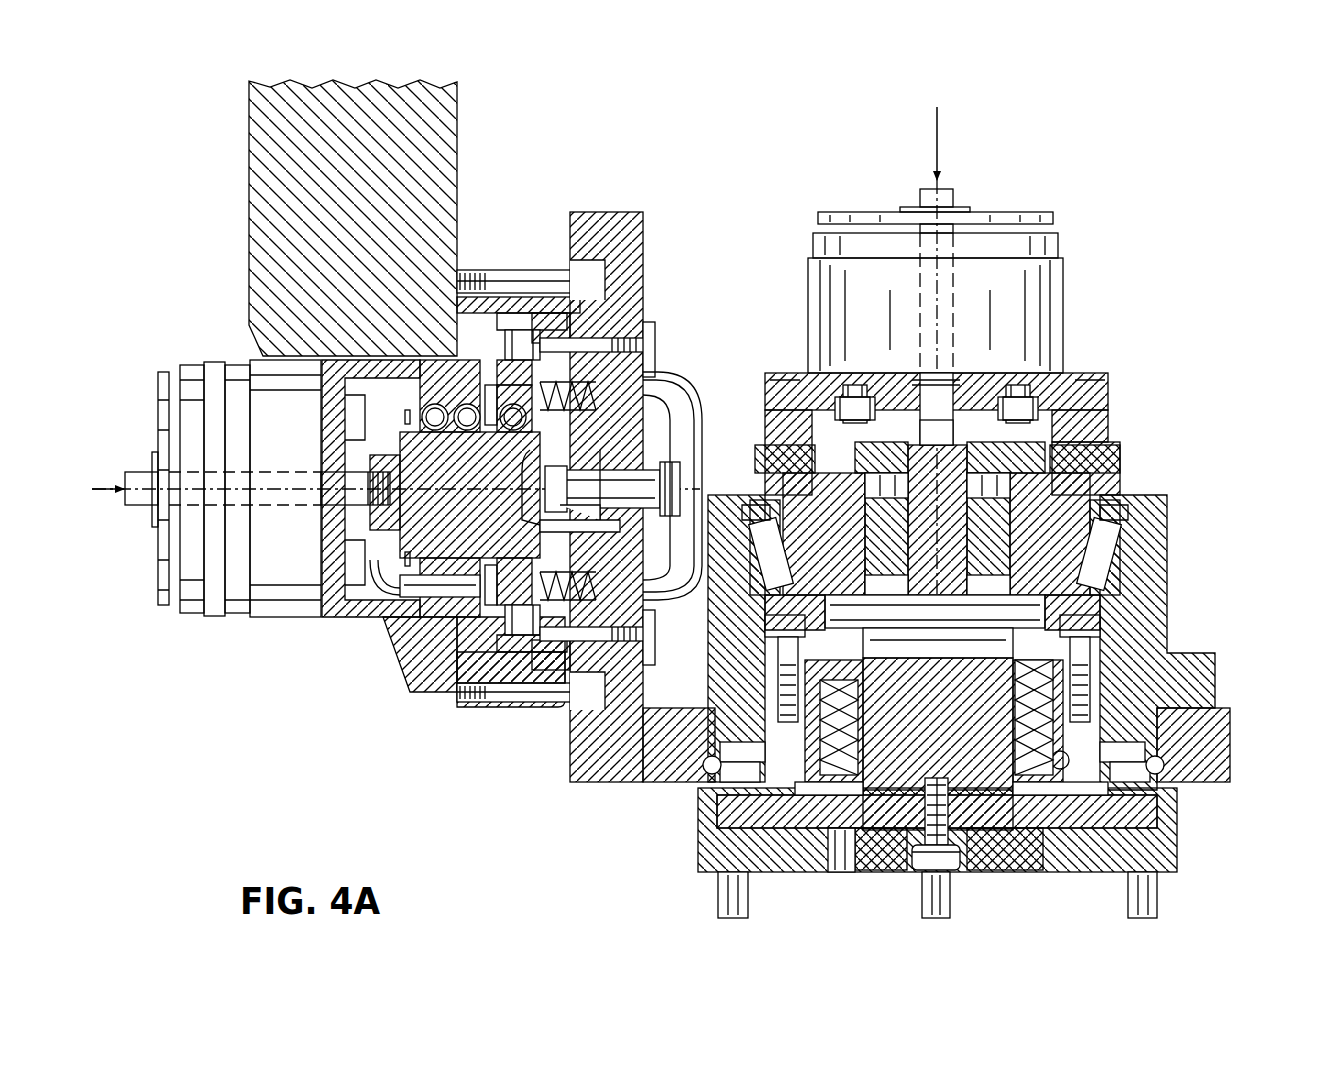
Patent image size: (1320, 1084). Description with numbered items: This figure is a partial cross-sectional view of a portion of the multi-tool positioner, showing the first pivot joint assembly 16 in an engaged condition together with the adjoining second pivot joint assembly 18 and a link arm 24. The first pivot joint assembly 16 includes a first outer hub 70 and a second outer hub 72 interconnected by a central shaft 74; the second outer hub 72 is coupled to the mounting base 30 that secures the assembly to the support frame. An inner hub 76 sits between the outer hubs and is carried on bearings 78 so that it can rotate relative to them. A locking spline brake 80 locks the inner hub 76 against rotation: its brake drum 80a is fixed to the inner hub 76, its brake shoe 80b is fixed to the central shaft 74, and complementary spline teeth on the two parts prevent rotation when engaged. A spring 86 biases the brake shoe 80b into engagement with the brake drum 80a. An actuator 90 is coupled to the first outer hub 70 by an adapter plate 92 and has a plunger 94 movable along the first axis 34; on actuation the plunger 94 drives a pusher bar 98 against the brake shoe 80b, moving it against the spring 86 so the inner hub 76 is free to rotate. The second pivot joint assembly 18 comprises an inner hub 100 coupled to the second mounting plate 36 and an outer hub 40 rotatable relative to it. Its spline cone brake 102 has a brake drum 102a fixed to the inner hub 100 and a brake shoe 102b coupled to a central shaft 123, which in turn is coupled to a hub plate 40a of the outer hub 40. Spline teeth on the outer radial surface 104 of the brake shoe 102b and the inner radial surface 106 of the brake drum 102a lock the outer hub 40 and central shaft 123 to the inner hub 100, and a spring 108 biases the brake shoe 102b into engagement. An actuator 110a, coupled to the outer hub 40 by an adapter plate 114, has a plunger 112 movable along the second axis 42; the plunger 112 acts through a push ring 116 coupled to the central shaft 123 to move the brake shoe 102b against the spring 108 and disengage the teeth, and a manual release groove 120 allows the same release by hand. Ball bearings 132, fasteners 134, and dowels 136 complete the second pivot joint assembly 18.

The first pivot joint assembly 16 is at (1246, 346).
The second pivot joint assembly 18 is at (318, 724).
The link arm 24 is at (248, 213).
The mounting base 30 is at (1178, 852).
The first axis 34 is at (935, 277).
The second mounting plate 36 is at (626, 212).
The outer hub 40 is at (553, 712).
The hub plate 40a is at (478, 266).
The second axis 42 is at (242, 470).
The first outer hub 70 is at (1118, 468).
The second outer hub 72 is at (1148, 812).
The central shaft 74 is at (990, 820).
The inner hub 76 is at (1163, 530).
The bearings 78 is at (1125, 560).
The locking spline brake 80 is at (1112, 671).
The brake drum 80a is at (1105, 645).
The brake shoe 80b is at (1010, 680).
The spring 86 is at (848, 738).
The actuator 90 is at (1066, 282).
The adapter plate 92 is at (1100, 373).
The plunger 94 is at (893, 400).
The pusher bar 98 is at (890, 612).
The inner hub 100 is at (605, 322).
The spline cone brake 102 is at (518, 655).
The brake drum 102a is at (516, 330).
The brake shoe 102b is at (495, 345).
The outer radial surface 104 is at (470, 648).
The inner radial surface 106 is at (522, 568).
The spring 108 is at (605, 382).
The actuator 110a is at (190, 362).
The plunger 112 is at (330, 470).
The adapter plate 114 is at (326, 618).
The push ring 116 is at (486, 440).
The manual release groove 120 is at (238, 618).
The central shaft 123 is at (395, 540).
The ball bearings 132 is at (432, 404).
The fasteners 134 is at (640, 345).
The dowels 136 is at (662, 430).